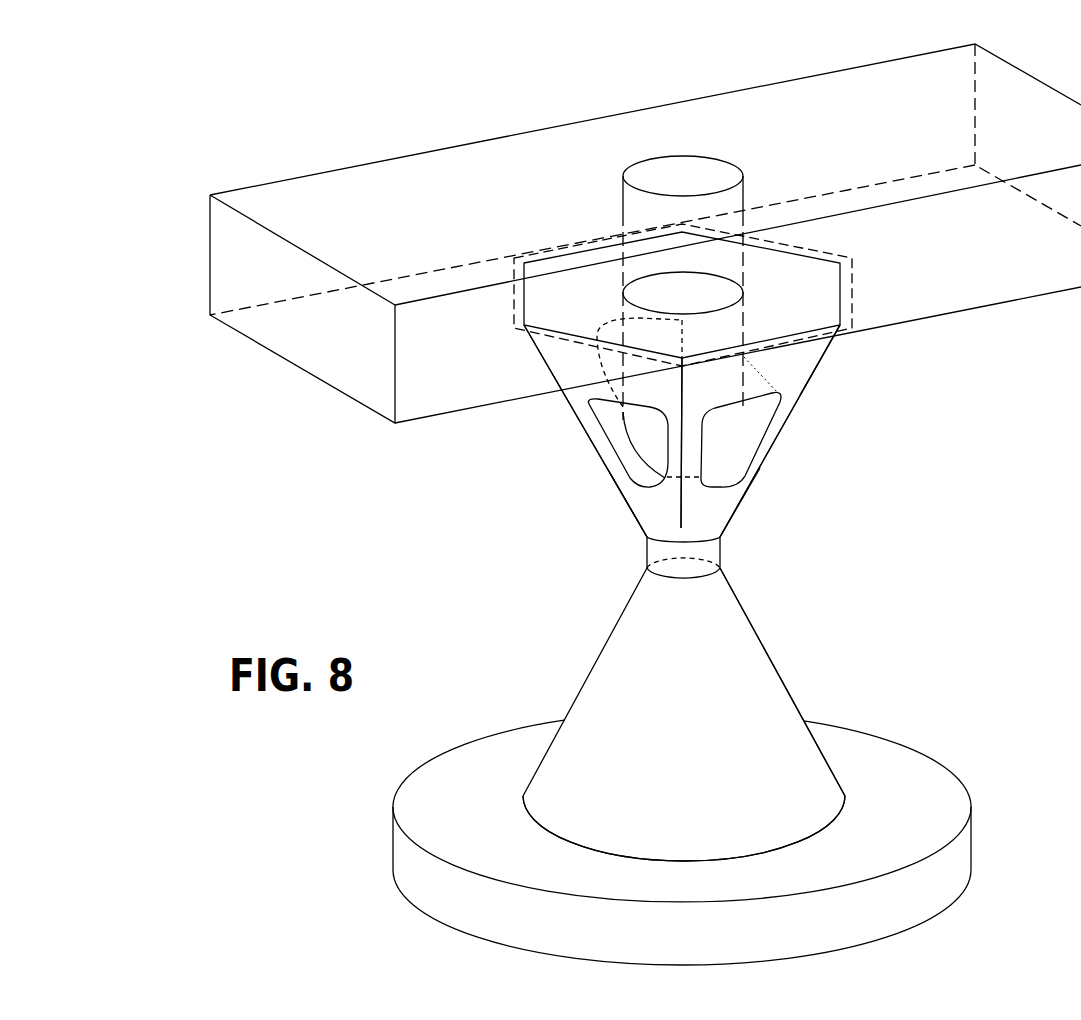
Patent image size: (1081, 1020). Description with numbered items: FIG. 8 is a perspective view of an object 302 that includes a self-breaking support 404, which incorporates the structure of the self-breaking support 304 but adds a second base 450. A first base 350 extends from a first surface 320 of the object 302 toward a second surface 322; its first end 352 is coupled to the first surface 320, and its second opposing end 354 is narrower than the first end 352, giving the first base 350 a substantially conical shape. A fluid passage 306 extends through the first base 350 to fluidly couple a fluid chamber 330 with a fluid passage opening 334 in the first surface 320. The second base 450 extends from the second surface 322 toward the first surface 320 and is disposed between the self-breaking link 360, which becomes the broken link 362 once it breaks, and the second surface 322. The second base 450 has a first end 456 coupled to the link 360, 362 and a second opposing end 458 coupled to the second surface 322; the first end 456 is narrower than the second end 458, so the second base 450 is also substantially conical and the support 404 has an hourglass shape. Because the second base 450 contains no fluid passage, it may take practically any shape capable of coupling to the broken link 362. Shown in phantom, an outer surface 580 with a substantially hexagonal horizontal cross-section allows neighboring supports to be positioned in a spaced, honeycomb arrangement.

The object 302 is at (400, 111).
The first surface 320 is at (346, 396).
The fluid passage opening 334 is at (622, 207).
The outer surface 580 is at (512, 307).
The self-breaking support 304 is at (804, 408).
The first end 352 is at (807, 352).
The fluid passage 306 is at (753, 433).
The first base 350 is at (713, 497).
The second opposing end 354 is at (663, 513).
The self-breaking link 360 is at (700, 550).
The broken link 362 is at (658, 581).
The self-breaking support 404 is at (450, 520).
The fluid chamber 330 is at (487, 608).
The second base 450 is at (568, 678).
The first end 456 is at (721, 620).
The second opposing end 458 is at (815, 784).
The second surface 322 is at (422, 805).